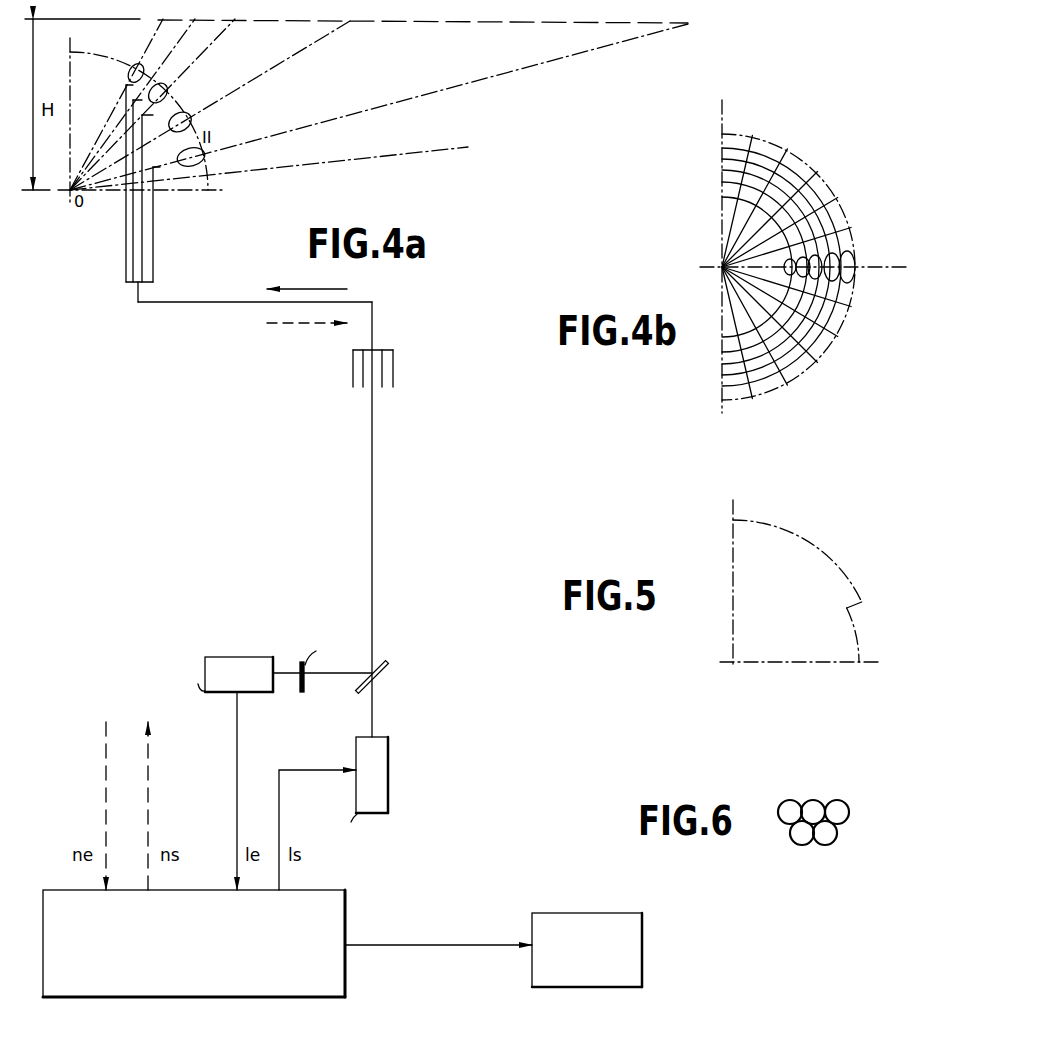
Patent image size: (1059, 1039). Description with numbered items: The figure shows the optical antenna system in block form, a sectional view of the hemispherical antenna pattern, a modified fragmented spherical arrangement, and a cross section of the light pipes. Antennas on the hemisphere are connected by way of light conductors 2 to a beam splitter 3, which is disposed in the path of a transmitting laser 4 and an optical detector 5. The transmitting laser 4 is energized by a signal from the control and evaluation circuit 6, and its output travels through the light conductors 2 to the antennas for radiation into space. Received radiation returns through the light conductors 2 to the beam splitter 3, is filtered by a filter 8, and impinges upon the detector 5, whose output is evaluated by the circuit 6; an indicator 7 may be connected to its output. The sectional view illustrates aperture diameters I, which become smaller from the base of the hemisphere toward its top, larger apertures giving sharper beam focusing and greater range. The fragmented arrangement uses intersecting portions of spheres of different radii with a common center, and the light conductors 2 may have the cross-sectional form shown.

In FIG. 4a, the light conductors 2 is at (204, 301).
In FIG. 6, the light conductors 2 is at (843, 818).
In FIG. 4a, the beam splitter 3 is at (392, 670).
In FIG. 4a, the transmitting laser 4 is at (378, 780).
In FIG. 4a, the optical detector 5 is at (244, 685).
In FIG. 4a, the control and evaluation circuit 6 is at (193, 920).
In FIG. 4a, the indicator 7 is at (600, 983).
In FIG. 4a, the filter 8 is at (304, 690).
In FIG. 4b, the aperture diameters I is at (854, 264).